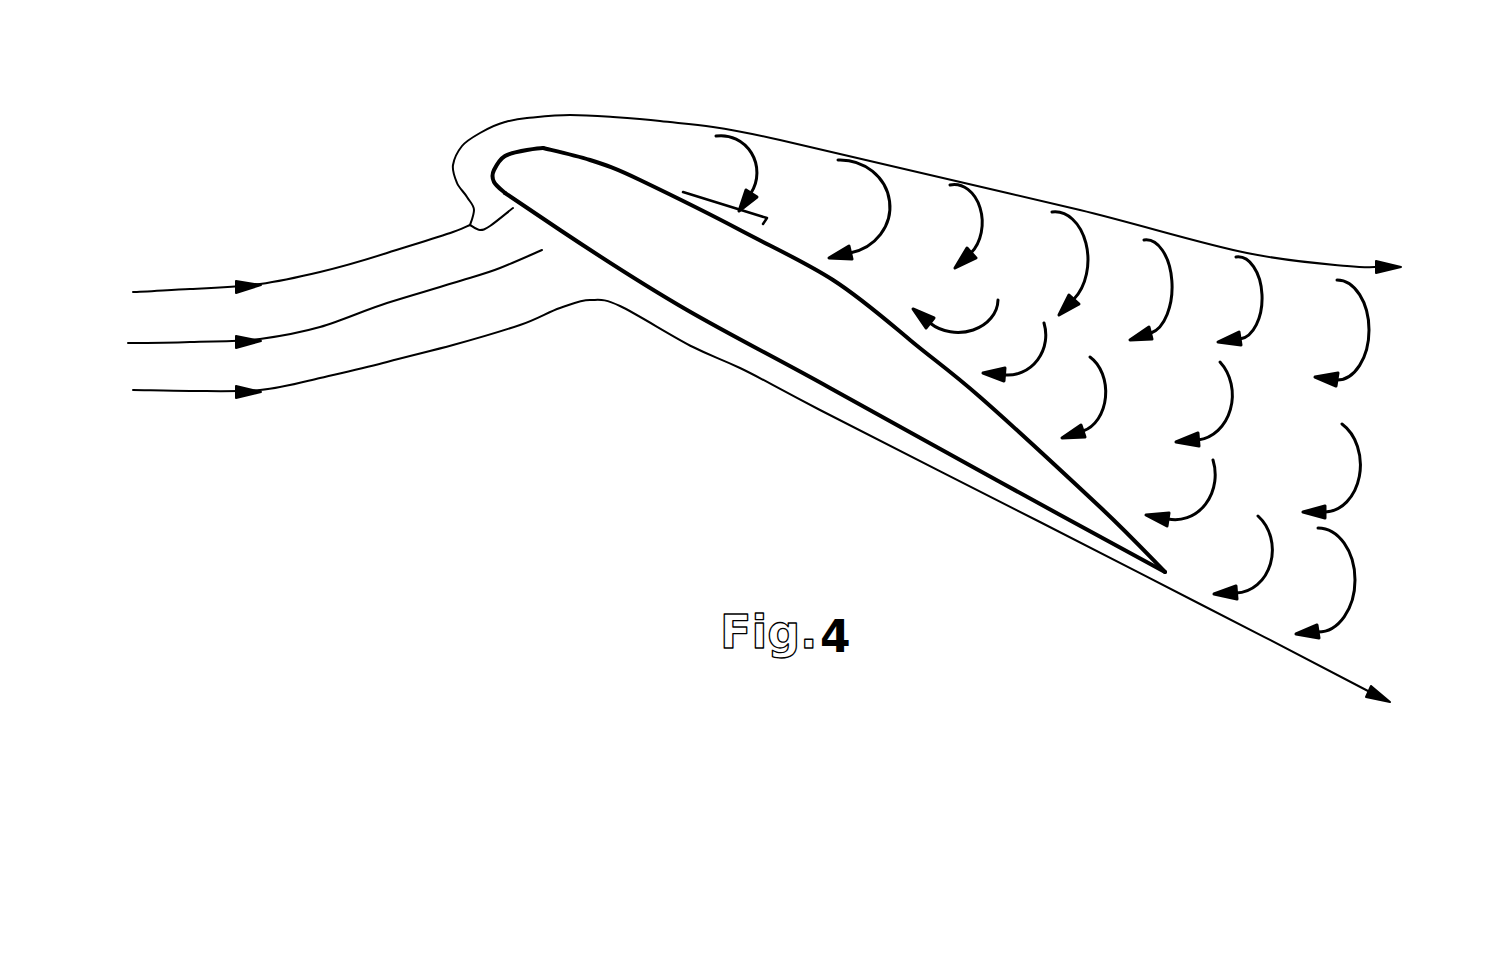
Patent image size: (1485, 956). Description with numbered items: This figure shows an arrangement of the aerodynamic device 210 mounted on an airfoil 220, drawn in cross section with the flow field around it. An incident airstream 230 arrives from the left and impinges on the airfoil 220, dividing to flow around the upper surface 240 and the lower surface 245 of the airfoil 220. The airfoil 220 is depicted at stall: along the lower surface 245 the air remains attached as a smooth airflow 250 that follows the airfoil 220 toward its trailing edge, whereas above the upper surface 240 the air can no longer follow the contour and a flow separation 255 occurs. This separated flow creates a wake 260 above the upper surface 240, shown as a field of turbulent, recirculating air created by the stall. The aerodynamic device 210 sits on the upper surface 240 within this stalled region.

The aerodynamic device 210 is at (763, 220).
The airfoil 220 is at (512, 143).
The incident airstream 230 is at (273, 262).
The upper surface 240 is at (543, 148).
The lower surface 245 is at (467, 220).
The smooth airflow 250 is at (840, 420).
The flow separation 255 is at (673, 120).
The wake 260 is at (760, 172).